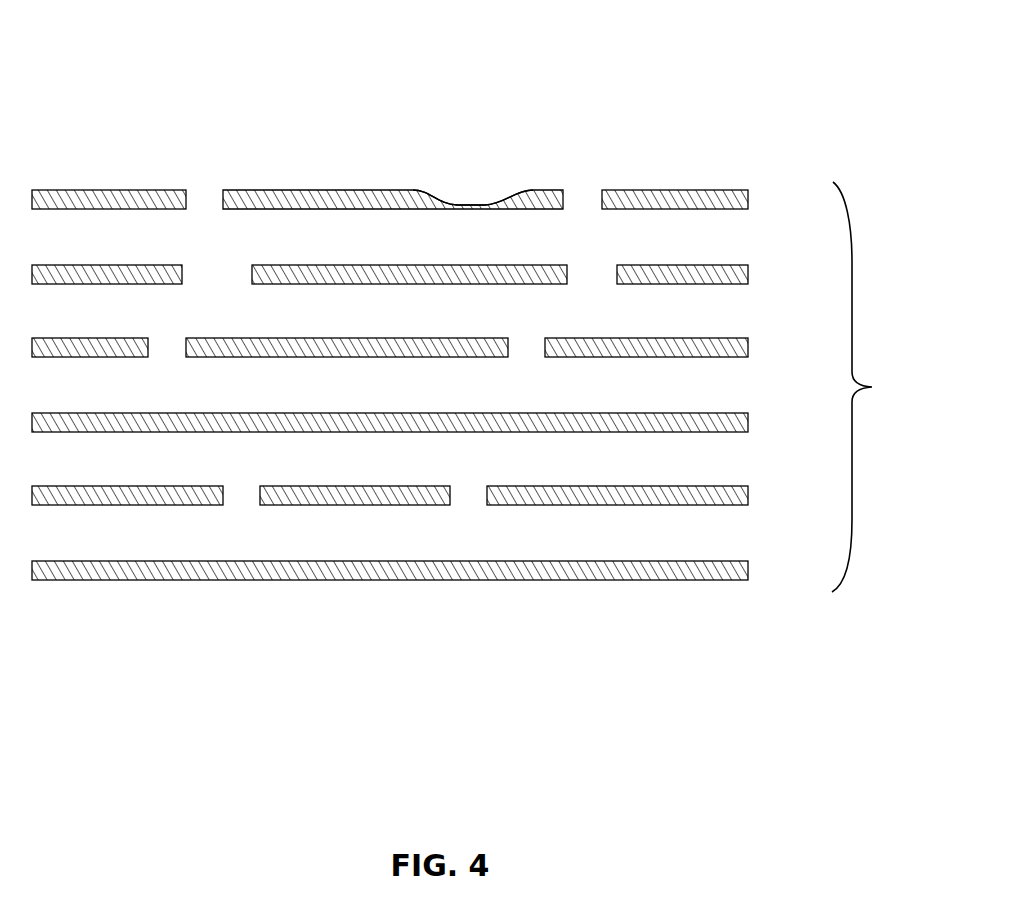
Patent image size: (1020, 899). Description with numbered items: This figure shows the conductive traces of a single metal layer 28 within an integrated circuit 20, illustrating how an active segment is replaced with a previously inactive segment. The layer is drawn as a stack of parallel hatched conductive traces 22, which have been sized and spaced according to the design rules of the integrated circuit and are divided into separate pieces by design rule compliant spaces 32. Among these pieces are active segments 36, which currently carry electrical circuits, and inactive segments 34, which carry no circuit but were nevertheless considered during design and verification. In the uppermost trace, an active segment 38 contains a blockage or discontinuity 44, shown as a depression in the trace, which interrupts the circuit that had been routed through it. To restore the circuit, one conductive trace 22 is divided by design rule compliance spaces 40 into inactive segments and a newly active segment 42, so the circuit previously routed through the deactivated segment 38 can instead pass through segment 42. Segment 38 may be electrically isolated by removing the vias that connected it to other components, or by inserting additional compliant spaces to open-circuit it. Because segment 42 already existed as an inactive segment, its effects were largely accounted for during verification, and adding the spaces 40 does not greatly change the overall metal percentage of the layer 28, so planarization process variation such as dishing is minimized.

The integrated circuit 20 is at (564, 88).
The conductive trace 22 is at (746, 190).
The metal layer 28 is at (478, 356).
The design rule compliant space 32 is at (600, 182).
The inactive segment 34 is at (88, 190).
The active segment 36 is at (258, 338).
The active segment 38 is at (267, 190).
The design rule compliance space 40 is at (213, 277).
The active segment 42 is at (432, 265).
The blockage or discontinuity 44 is at (472, 204).